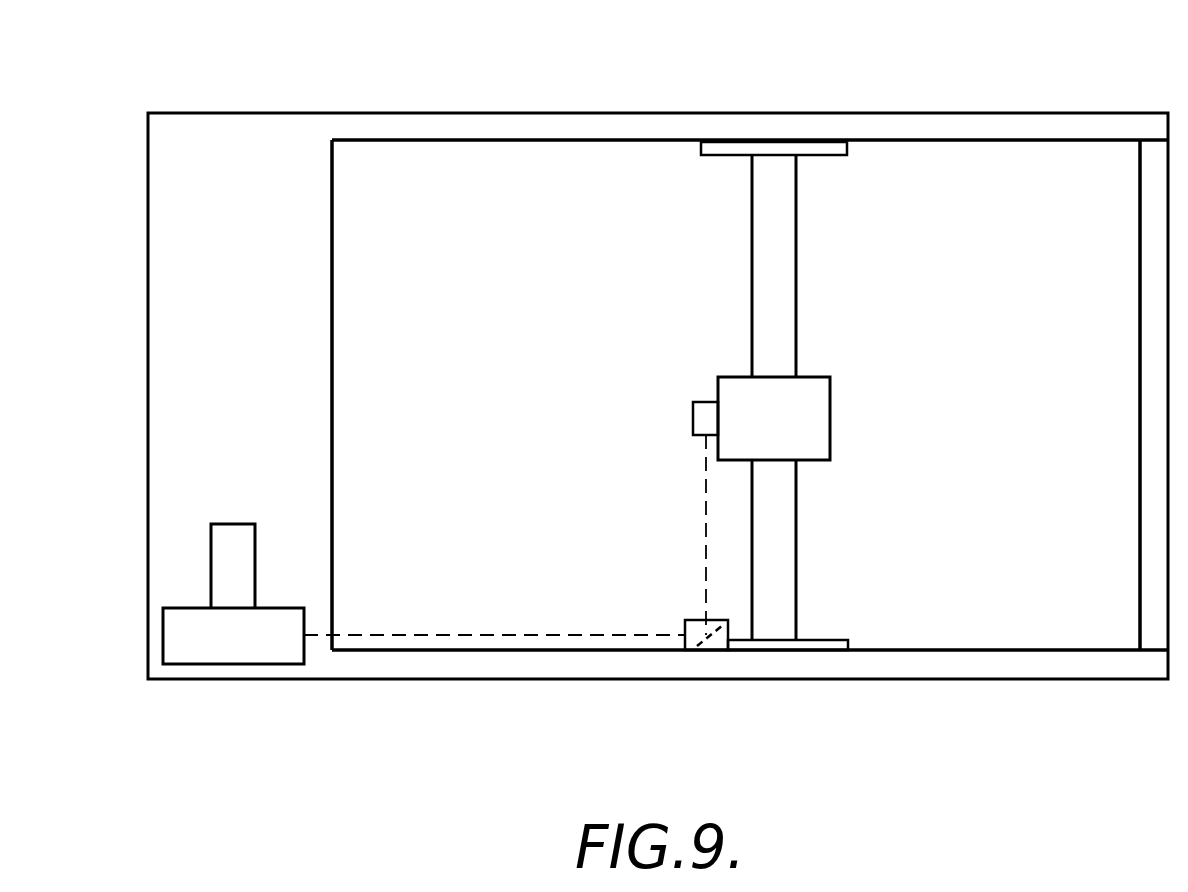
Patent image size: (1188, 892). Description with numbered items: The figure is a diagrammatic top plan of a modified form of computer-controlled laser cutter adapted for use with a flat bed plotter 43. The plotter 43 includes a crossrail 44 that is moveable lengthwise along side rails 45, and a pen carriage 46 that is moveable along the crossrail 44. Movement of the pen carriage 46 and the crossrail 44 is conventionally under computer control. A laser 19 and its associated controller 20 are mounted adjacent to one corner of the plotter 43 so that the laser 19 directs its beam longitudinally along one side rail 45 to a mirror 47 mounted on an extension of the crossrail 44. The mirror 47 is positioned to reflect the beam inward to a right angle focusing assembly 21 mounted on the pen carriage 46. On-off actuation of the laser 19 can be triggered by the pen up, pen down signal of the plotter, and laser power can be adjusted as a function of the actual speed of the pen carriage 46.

The plotter 43 is at (356, 110).
The side rails 45 is at (1014, 122).
The crossrail 44 is at (782, 547).
The pen carriage 46 is at (830, 420).
The right angle focusing assembly 21 is at (698, 410).
The mirror 47 is at (725, 652).
The laser 19 is at (231, 640).
The controller 20 is at (228, 565).